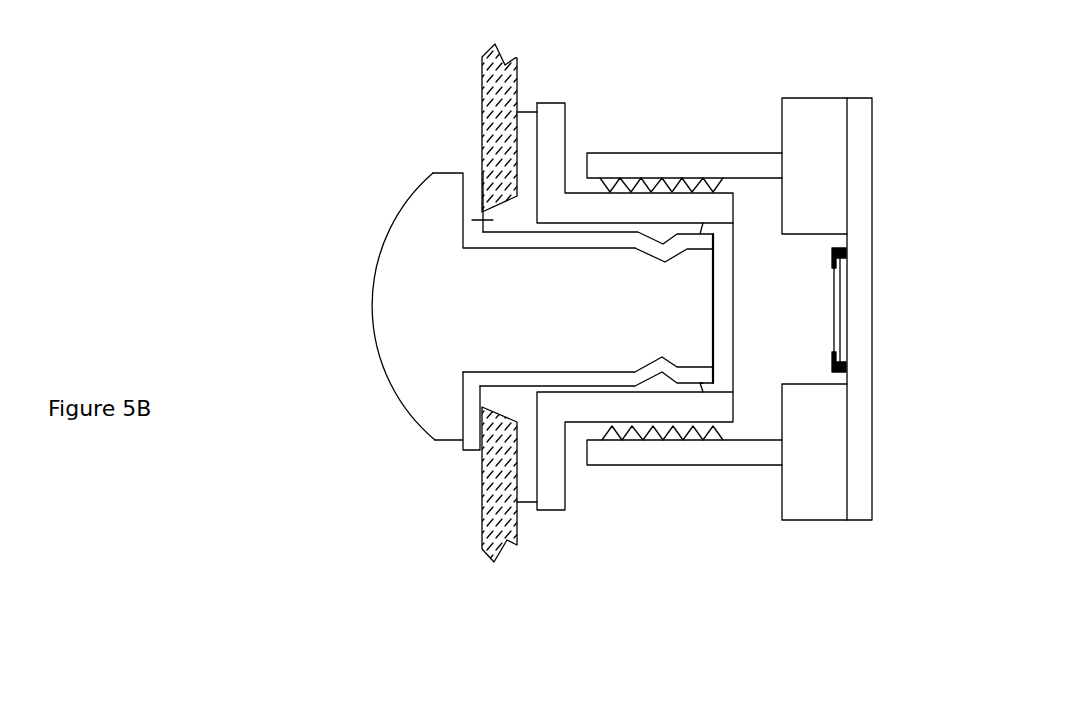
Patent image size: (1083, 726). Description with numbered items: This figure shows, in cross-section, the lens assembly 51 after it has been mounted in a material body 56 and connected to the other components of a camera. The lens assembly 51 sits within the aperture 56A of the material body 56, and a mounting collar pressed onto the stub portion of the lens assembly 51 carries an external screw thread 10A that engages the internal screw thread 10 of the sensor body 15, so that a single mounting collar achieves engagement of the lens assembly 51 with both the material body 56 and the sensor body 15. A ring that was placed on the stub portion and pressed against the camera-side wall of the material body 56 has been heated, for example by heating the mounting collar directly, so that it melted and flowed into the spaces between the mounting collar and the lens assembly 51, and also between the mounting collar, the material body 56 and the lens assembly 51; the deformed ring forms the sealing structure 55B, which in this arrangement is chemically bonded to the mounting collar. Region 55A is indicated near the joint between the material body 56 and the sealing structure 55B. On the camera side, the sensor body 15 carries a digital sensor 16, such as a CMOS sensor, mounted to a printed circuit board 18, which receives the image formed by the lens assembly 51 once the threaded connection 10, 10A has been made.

The lens assembly 51 is at (408, 342).
The housing upper arm 55A is at (477, 220).
The sealing structure 55B is at (671, 207).
The material body 56 is at (543, 560).
The aperture 56A is at (473, 412).
The internal screw thread 10 is at (678, 440).
The external screw thread 10A is at (637, 170).
The sensor body 15 is at (832, 80).
The digital sensor 16 is at (855, 293).
The printed circuit board 18 is at (882, 406).